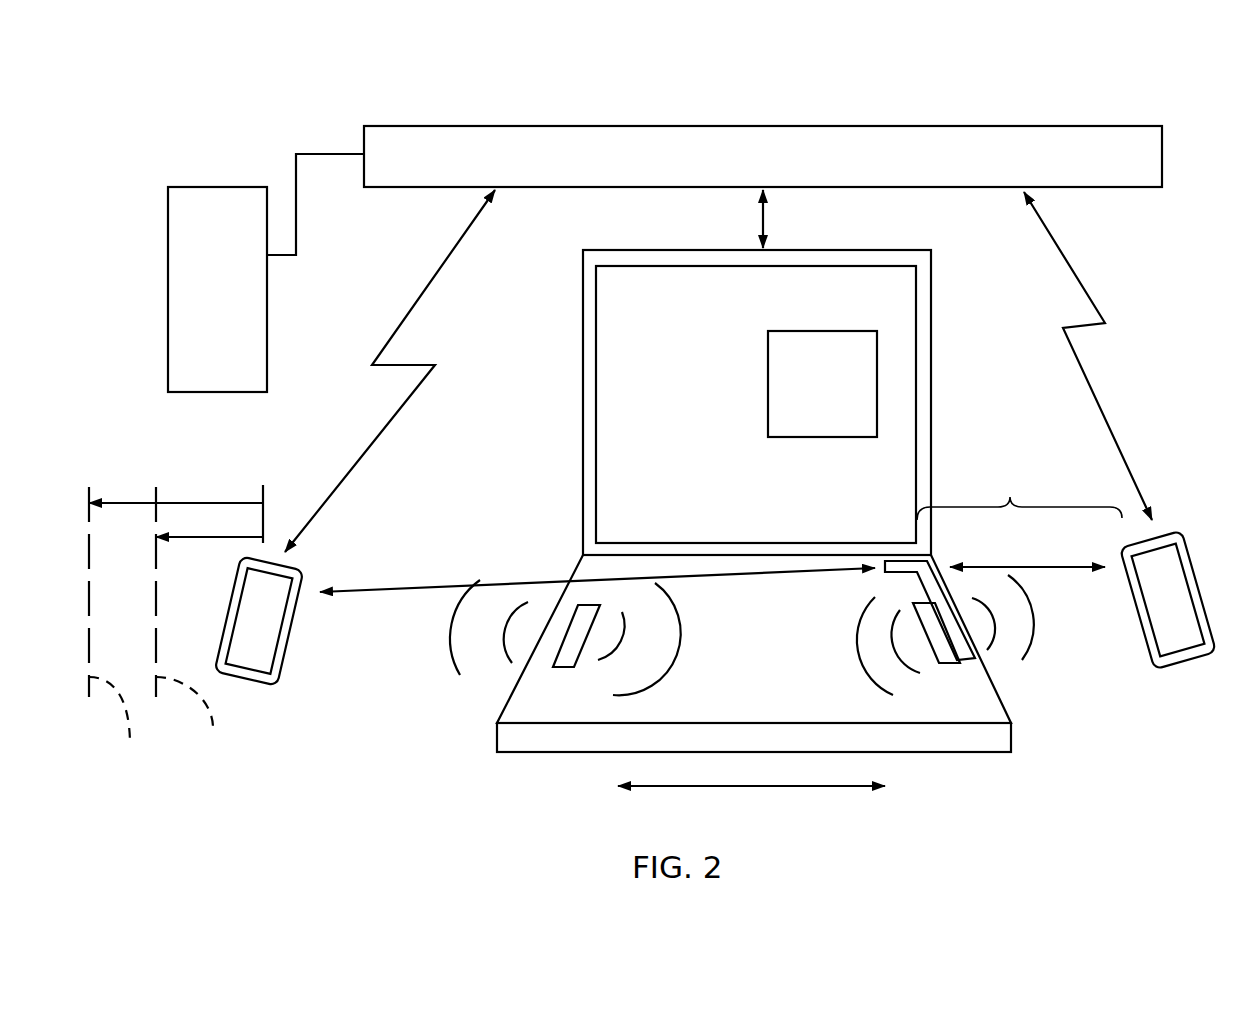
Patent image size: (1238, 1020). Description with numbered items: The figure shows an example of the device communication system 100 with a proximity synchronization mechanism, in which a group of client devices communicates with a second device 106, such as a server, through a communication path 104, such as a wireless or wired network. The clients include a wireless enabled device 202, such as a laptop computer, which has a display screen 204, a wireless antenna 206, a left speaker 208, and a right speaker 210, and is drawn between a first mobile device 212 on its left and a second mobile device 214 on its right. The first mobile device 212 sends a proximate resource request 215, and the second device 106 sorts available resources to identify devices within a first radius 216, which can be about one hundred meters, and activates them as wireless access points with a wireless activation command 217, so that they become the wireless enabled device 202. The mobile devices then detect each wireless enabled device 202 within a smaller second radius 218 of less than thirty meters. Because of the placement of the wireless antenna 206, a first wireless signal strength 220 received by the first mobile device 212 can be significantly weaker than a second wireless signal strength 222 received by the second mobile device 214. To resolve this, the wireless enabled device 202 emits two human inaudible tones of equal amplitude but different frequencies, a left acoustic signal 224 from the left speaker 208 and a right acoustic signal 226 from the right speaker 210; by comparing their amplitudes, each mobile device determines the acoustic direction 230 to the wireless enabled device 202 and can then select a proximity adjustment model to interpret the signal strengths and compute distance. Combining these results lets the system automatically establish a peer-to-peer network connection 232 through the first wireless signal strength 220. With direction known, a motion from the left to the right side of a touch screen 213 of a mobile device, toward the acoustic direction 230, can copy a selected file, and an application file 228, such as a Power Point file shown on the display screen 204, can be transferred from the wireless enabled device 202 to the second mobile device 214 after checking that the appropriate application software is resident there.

The device communication system 100 is at (213, 97).
The communication path 104 is at (763, 156).
The second device 106 is at (266, 273).
The wireless enabled device 202 is at (754, 653).
The display screen 204 is at (628, 316).
The wireless antenna 206 is at (968, 657).
The left speaker 208 is at (570, 662).
The right speaker 210 is at (943, 655).
The first mobile device 212 is at (298, 622).
The touch screen 213 is at (259, 621).
The second mobile device 214 is at (1182, 660).
The proximate resource request 215 is at (432, 282).
The first radius 216 is at (176, 632).
The wireless activation command 217 is at (763, 216).
The second radius 218 is at (209, 623).
The first wireless signal strength 220 is at (387, 590).
The second wireless signal strength 222 is at (1055, 565).
The left acoustic signal 224 is at (452, 668).
The right acoustic signal 226 is at (1022, 660).
The application file 228 is at (822, 384).
The acoustic direction 230 is at (810, 786).
The peer-to-peer network connection 232 is at (1010, 497).